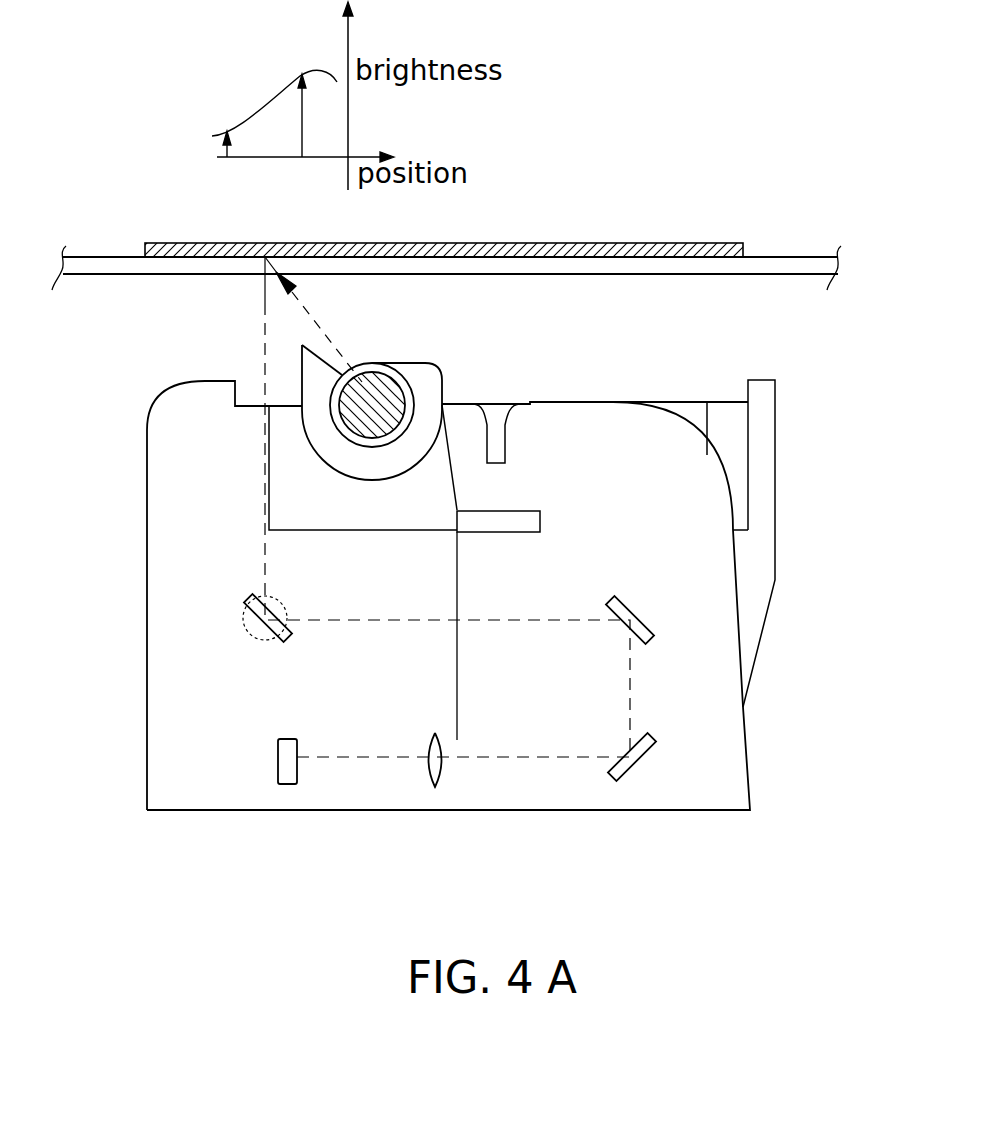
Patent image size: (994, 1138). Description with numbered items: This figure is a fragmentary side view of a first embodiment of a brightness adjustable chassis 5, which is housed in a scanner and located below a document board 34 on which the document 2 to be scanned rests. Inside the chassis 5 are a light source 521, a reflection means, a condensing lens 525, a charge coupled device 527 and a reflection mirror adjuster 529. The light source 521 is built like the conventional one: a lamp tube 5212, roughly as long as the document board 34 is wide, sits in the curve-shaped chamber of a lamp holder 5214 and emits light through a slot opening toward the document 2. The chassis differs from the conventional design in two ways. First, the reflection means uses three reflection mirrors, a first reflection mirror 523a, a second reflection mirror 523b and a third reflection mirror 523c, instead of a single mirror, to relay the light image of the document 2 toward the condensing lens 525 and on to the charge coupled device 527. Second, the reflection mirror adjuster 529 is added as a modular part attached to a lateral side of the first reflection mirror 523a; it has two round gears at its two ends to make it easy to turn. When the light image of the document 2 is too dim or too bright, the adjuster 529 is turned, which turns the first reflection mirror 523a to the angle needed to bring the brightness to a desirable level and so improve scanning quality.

The document 2 is at (582, 226).
The document board 34 is at (773, 265).
The chassis 5 is at (782, 471).
The light source 521 is at (431, 380).
The lamp tube 5212 is at (372, 393).
The lamp holder 5214 is at (425, 377).
The first reflection mirror 523a is at (242, 600).
The second reflection mirror 523b is at (653, 630).
The third reflection mirror 523c is at (625, 772).
The condensing lens 525 is at (435, 788).
The charge coupled device 527 is at (288, 785).
The reflection mirror adjuster 529 is at (245, 632).